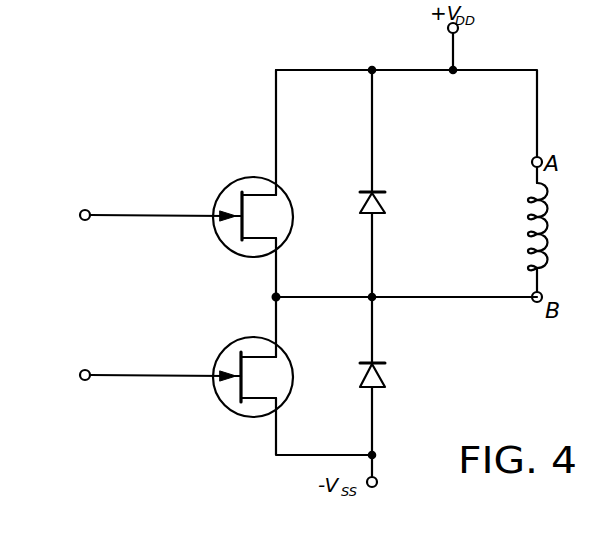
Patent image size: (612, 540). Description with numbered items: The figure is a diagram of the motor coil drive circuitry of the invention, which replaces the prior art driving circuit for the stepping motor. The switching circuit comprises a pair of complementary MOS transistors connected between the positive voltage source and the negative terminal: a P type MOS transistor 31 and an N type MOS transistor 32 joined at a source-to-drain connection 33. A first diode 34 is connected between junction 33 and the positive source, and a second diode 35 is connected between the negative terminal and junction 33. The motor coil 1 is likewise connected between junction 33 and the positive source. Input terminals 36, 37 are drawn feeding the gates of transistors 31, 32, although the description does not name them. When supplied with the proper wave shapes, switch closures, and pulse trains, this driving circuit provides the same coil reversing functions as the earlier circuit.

The motor coil 1 is at (547, 223).
The P type MOS transistor 31 is at (229, 185).
The N type MOS transistor 32 is at (235, 415).
The source-to-drain connection 33 is at (270, 297).
The first diode 34 is at (385, 202).
The second diode 35 is at (385, 375).
The gate input terminal of transistor 31 36 is at (80, 213).
The gate input terminal of transistor 32 37 is at (80, 377).